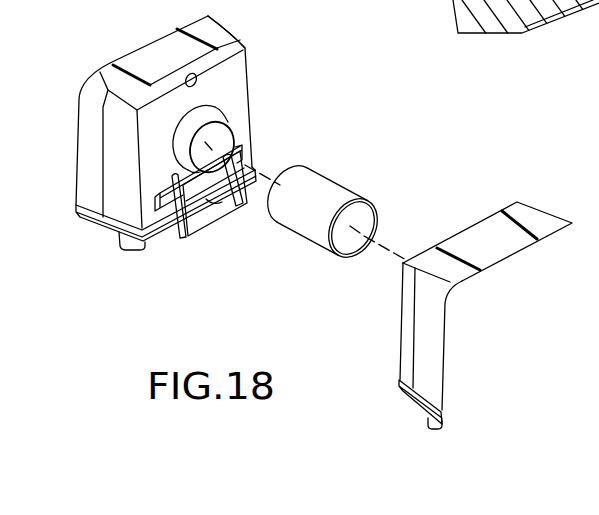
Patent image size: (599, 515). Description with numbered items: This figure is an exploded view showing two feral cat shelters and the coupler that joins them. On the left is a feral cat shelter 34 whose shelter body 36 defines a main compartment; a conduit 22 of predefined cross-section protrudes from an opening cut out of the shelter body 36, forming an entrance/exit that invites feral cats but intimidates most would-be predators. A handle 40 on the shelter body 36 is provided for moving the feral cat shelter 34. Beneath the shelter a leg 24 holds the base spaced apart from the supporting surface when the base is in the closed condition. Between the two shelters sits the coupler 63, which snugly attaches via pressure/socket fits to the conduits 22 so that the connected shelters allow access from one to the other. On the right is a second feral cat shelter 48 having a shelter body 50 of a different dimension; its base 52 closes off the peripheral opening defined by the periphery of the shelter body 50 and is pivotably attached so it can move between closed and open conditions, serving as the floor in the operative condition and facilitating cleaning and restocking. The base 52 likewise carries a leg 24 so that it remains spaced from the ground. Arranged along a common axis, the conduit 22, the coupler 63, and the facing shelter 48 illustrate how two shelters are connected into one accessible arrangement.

The feral cat shelter 34 is at (113, 43).
The shelter body 36 is at (244, 46).
The conduit 22 is at (233, 130).
The handle 40 is at (196, 234).
The leg 24 is at (133, 251).
The coupler 63 is at (340, 181).
The shelter body 50 is at (528, 204).
The feral cat shelter 48 is at (462, 300).
The base 52 is at (400, 397).